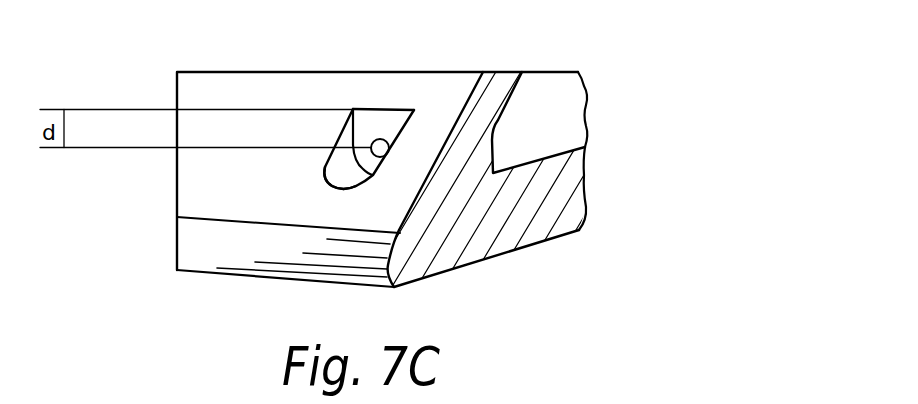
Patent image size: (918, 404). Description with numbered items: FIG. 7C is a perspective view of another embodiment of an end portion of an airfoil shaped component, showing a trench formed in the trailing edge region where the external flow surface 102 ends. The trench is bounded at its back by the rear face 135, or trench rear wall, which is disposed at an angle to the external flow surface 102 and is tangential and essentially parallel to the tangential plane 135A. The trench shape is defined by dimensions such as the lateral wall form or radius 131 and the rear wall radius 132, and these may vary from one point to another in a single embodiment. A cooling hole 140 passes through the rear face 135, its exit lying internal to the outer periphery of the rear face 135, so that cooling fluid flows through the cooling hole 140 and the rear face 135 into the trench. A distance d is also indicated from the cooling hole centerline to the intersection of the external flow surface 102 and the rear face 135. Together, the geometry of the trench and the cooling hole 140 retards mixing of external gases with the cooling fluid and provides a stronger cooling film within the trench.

The external flow surface 102 is at (193, 177).
The lateral wall form or radius 131 is at (343, 190).
The rear wall radius 132 is at (355, 164).
The rear face 135 is at (365, 123).
The tangential plane 135A is at (405, 103).
The cooling hole 140 is at (380, 139).